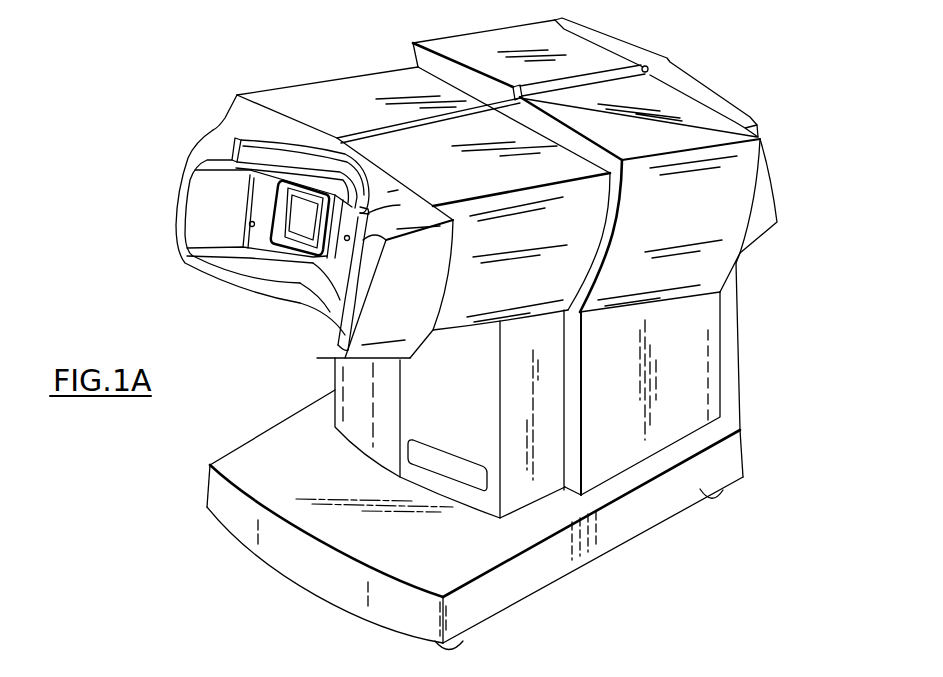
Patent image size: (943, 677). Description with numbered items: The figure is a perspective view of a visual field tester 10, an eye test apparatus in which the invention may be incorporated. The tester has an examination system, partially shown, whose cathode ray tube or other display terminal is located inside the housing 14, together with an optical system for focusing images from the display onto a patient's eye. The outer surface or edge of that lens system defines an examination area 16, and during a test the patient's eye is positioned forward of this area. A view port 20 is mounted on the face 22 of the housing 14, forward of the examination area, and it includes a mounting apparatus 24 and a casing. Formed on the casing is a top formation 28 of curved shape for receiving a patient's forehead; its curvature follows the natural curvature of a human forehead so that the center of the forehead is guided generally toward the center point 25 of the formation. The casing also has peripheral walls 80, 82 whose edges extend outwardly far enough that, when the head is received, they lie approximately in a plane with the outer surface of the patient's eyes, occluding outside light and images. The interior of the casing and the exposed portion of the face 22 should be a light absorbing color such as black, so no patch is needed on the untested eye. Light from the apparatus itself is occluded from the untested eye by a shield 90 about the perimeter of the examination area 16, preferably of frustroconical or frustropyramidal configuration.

The visual field tester 10 is at (726, 51).
The housing 14 is at (765, 170).
The examination area 16 is at (290, 220).
The view port 20 is at (430, 268).
The face 22 is at (245, 106).
The mounting apparatus 24 is at (417, 355).
The center point 25 is at (333, 184).
The top formation 28 is at (283, 155).
The peripheral wall 80 is at (203, 193).
The peripheral wall 82 is at (345, 340).
The shield 90 is at (300, 305).